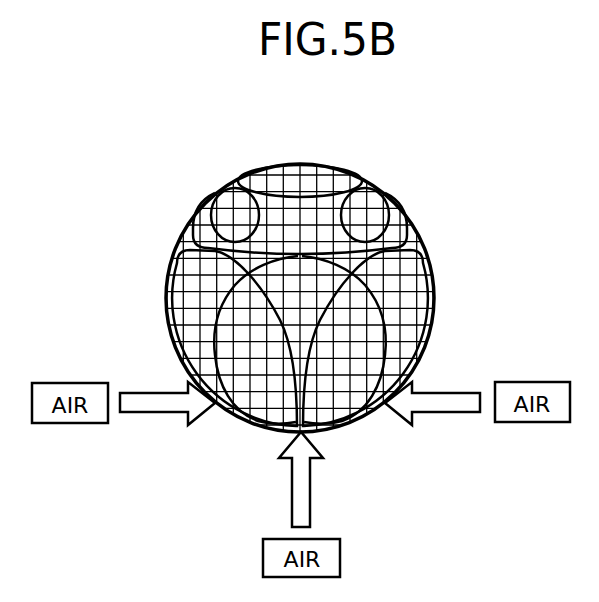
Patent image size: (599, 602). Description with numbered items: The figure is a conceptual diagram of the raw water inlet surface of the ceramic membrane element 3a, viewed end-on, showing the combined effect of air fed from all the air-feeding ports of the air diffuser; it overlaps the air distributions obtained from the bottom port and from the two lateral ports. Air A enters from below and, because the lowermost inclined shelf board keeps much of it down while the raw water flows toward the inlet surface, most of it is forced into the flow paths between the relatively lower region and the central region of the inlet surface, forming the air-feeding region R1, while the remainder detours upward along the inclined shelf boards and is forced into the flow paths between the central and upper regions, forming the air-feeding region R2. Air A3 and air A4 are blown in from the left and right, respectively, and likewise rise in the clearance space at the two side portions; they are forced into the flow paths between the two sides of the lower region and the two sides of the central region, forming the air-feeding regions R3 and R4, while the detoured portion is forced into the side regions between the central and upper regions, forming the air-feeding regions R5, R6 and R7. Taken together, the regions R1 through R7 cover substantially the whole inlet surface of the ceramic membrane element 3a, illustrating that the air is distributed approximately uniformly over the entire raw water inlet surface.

The ceramic membrane element 3a is at (423, 240).
The air-feeding region R1 is at (300, 300).
The air-feeding region R2 is at (327, 217).
The air-feeding region R3 is at (187, 310).
The air-feeding region R4 is at (415, 303).
The air-feeding region R5 is at (210, 228).
The air-feeding region R6 is at (397, 210).
The air-feeding region R7 is at (277, 183).
The air A is at (312, 510).
The air A3 is at (148, 393).
The air A4 is at (458, 392).